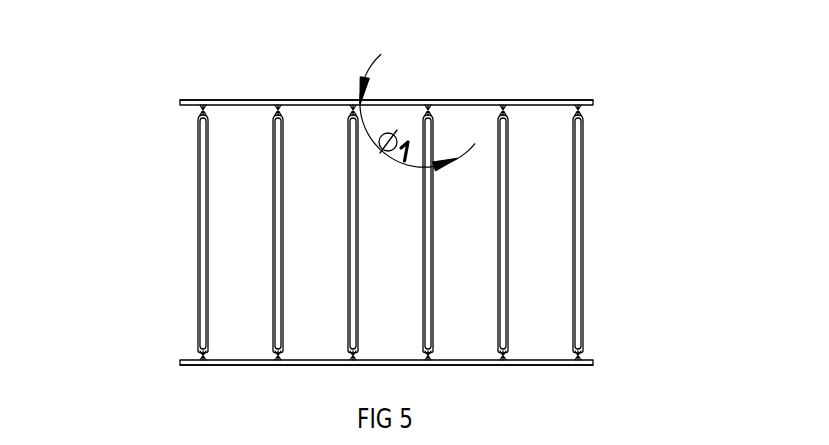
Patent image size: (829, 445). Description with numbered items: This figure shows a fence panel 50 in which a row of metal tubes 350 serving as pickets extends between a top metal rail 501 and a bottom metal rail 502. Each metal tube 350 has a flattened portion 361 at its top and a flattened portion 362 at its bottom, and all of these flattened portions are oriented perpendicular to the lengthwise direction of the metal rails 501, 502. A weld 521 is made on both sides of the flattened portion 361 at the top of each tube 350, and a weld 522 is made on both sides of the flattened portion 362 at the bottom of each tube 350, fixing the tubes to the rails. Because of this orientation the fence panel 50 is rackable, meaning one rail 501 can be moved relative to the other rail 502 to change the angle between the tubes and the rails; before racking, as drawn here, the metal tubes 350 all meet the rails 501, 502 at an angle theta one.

The fence panel 50 is at (467, 85).
The metal rail 501 is at (181, 104).
The metal rail 502 is at (180, 361).
The weld 521 is at (581, 110).
The weld 522 is at (579, 358).
The metal tube 350 is at (198, 237).
The flattened portion 361 is at (200, 113).
The flattened portion 362 is at (201, 352).